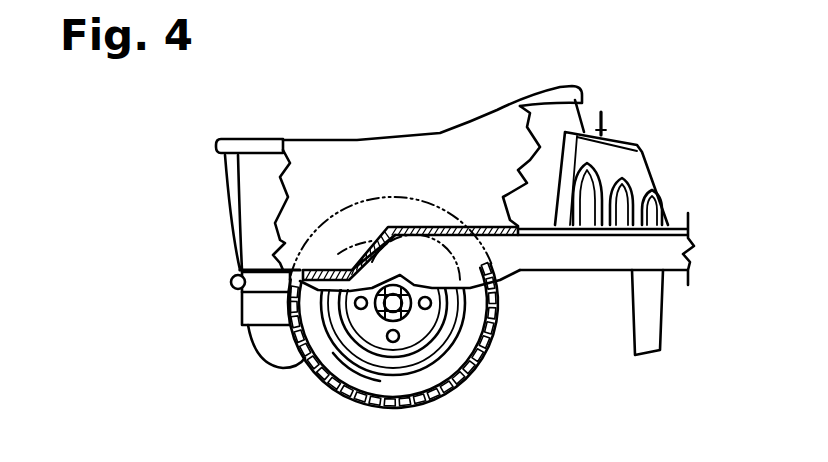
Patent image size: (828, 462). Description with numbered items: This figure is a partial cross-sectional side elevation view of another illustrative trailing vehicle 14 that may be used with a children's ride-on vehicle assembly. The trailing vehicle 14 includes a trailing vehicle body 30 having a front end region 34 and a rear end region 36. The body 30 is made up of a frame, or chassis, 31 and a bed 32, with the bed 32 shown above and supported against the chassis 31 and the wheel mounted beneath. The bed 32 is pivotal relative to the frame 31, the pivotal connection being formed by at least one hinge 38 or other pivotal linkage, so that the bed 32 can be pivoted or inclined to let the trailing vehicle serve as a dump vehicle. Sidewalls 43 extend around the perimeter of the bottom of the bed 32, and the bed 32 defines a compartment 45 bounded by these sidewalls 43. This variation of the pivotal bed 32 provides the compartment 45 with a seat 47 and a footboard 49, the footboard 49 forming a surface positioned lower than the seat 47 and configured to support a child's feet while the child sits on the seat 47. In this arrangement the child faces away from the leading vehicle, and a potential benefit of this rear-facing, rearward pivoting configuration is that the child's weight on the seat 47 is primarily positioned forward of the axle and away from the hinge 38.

The trailing vehicle 14 is at (356, 156).
The trailing vehicle body 30 is at (209, 147).
The frame 31 is at (587, 275).
The bed 32 is at (480, 114).
The front end region 34 is at (660, 170).
The rear end region 36 is at (180, 205).
The hinge 38 is at (238, 291).
The sidewalls 43 is at (518, 157).
The compartment 45 is at (357, 168).
The seat 47 is at (493, 226).
The footboard 49 is at (328, 270).